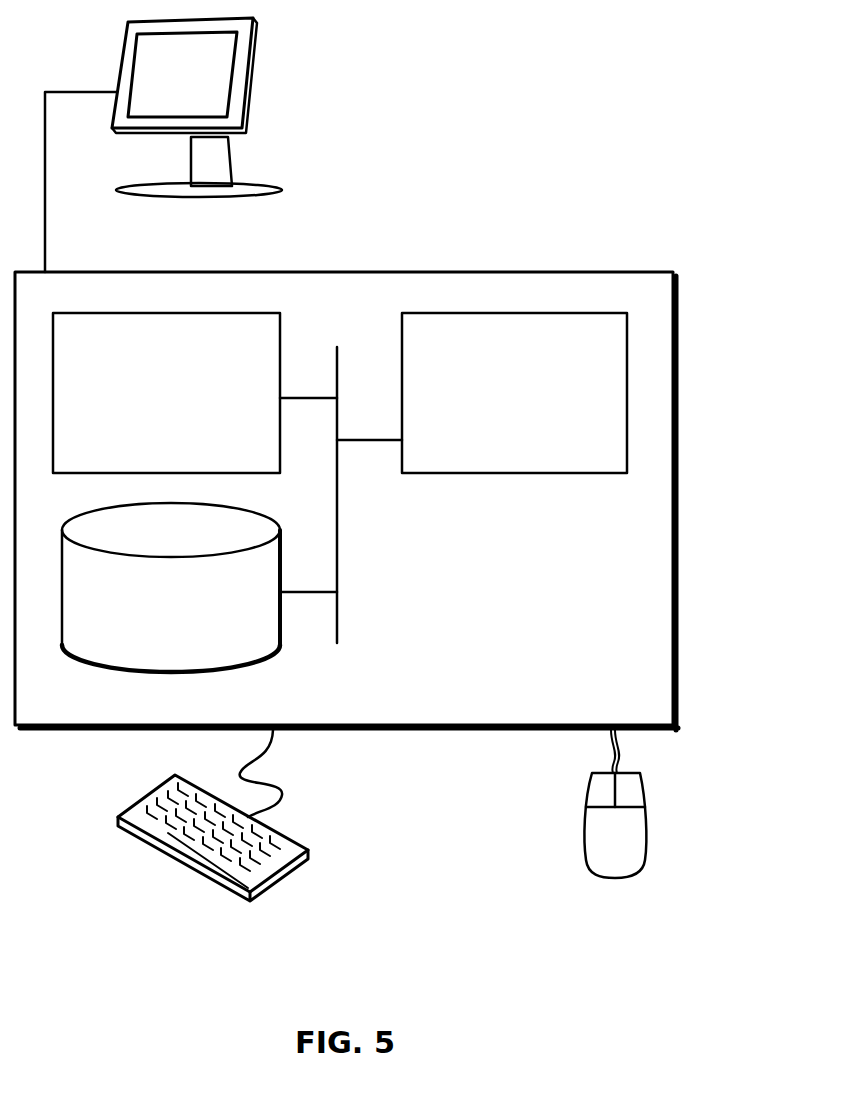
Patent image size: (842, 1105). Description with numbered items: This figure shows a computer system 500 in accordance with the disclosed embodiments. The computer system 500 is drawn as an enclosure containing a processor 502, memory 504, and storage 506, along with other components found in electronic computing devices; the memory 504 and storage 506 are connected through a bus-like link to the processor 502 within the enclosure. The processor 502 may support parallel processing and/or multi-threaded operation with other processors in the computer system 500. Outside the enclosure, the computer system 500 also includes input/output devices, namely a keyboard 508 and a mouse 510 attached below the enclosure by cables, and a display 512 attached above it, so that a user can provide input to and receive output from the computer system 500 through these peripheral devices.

The computer system 500 is at (390, 250).
The processor 502 is at (496, 407).
The memory 504 is at (147, 404).
The storage 506 is at (152, 615).
The keyboard 508 is at (137, 840).
The mouse 510 is at (594, 847).
The display 512 is at (163, 145).